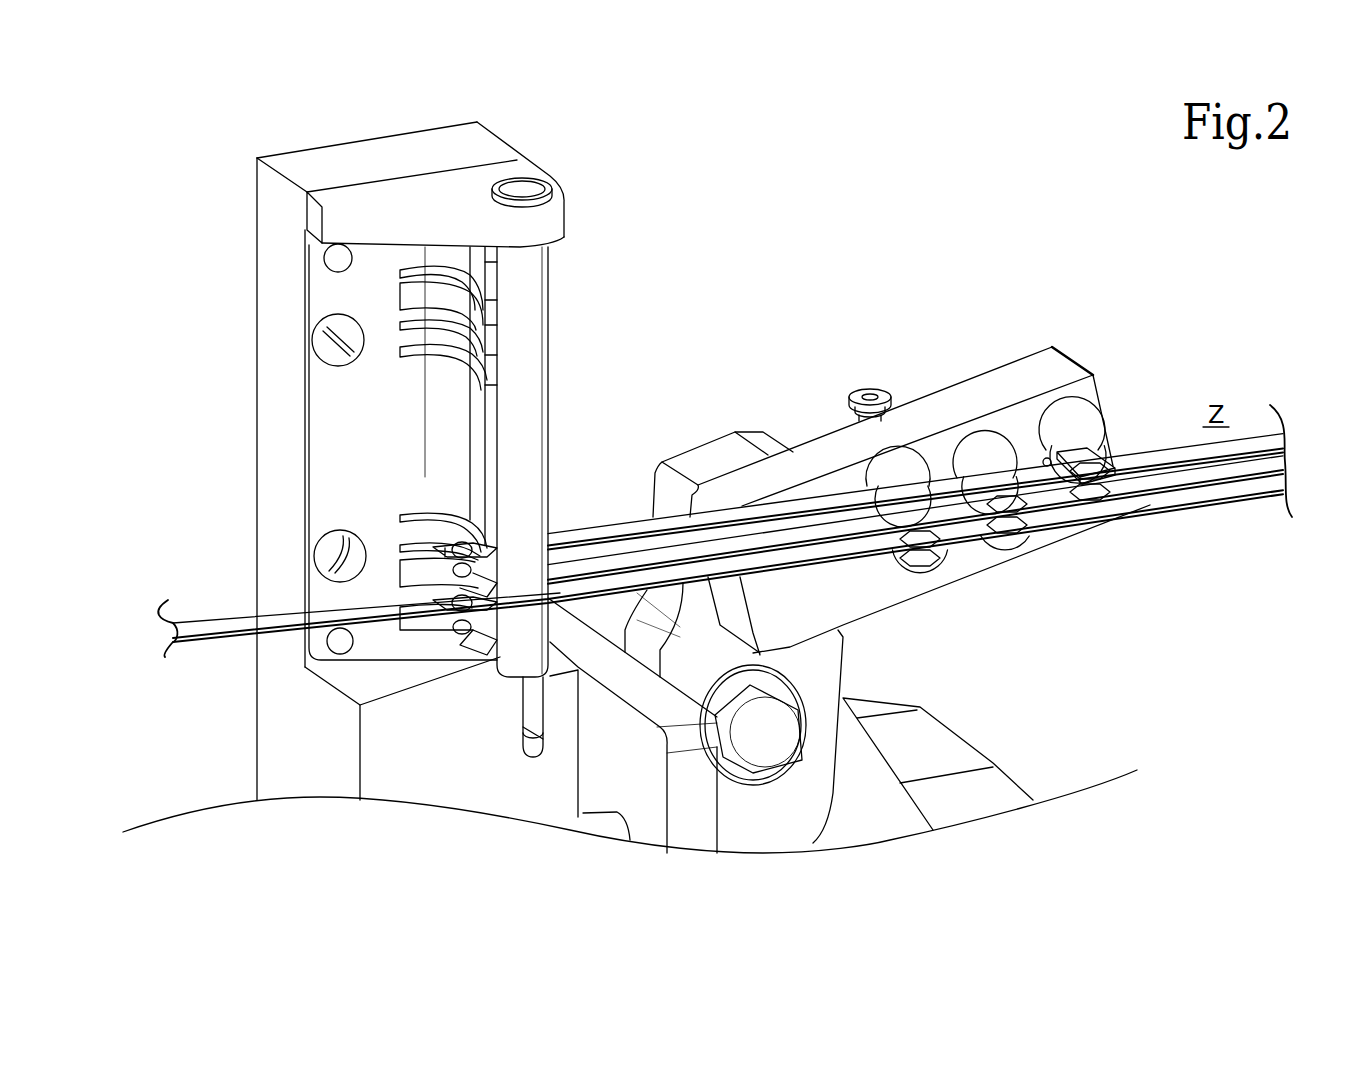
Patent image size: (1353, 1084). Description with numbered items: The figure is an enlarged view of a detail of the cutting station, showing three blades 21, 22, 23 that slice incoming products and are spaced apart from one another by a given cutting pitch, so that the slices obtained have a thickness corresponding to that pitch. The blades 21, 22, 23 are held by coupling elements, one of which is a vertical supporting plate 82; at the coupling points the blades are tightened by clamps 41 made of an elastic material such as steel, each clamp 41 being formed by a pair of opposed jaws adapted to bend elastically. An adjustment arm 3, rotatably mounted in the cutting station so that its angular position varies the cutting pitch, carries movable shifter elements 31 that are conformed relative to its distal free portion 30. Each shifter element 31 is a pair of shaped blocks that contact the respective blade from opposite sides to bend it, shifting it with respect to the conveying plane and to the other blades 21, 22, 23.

The vertical supporting plate 82 is at (326, 505).
The adjustment arm 3 is at (883, 527).
The distal free portion 30 is at (1017, 380).
The blade 23 is at (1155, 460).
The blade 22 is at (1238, 468).
The blade 21 is at (1220, 494).
The shifter element 31 is at (1103, 503).
The clamp 41 is at (408, 538).